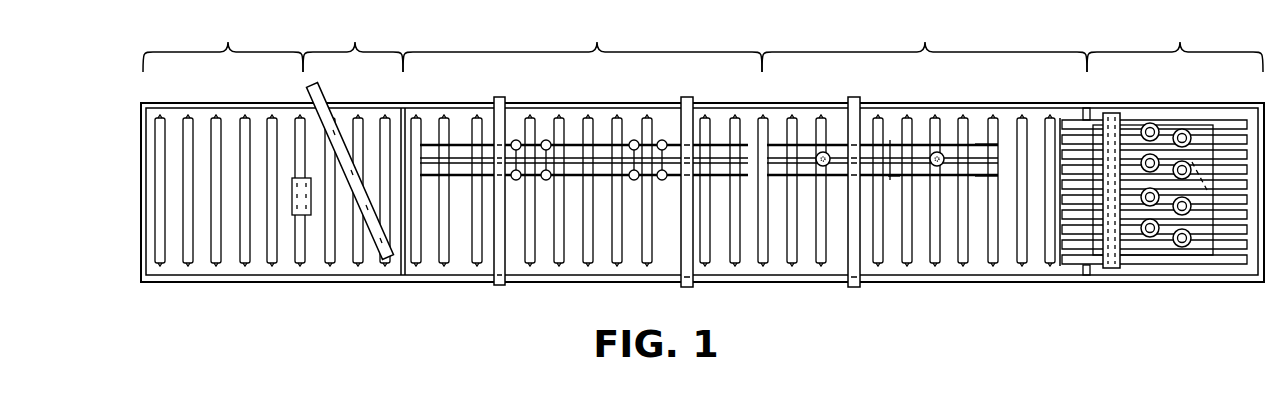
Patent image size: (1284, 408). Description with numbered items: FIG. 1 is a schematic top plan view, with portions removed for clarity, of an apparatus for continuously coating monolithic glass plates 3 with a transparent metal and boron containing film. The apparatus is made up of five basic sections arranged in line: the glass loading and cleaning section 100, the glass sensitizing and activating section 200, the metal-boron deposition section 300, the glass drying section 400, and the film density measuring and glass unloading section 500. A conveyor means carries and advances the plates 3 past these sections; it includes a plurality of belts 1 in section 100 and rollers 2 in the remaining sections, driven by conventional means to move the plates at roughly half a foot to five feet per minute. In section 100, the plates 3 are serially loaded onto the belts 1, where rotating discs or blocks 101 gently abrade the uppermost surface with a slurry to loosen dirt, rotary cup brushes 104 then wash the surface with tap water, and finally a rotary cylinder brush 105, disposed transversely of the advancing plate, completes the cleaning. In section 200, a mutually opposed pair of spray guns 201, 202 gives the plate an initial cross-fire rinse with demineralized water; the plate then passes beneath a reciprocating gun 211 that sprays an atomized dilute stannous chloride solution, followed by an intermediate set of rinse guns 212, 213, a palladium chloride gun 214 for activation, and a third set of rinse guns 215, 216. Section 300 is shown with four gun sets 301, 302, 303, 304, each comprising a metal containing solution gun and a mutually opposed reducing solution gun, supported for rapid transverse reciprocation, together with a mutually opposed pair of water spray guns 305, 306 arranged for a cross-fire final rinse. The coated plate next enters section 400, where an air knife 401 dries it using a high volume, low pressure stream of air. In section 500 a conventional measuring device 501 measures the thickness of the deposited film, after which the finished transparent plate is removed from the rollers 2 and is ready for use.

The film density measuring and glass unloading section 500 is at (229, 162).
The glass drying section 400 is at (353, 165).
The metal-boron deposition section 300 is at (582, 150).
The glass sensitizing and activating section 200 is at (922, 150).
The glass loading and cleaning section 100 is at (1161, 171).
The rollers 2 is at (148, 192).
The measuring device 501 is at (292, 215).
The air knife 401 is at (380, 245).
The water spray gun 306 is at (432, 145).
The water spray gun 305 is at (427, 177).
The gun set 304 is at (516, 140).
The gun set 303 is at (546, 140).
The gun set 302 is at (634, 140).
The gun set 301 is at (678, 108).
The rinse gun 216 is at (775, 145).
The rinse gun 215 is at (770, 176).
The palladium chloride gun 214 is at (822, 152).
The intermediate rinse gun 213 is at (892, 144).
The intermediate rinse gun 212 is at (890, 177).
The reciprocating gun 211 is at (938, 152).
The spray gun 202 is at (979, 148).
The spray gun 201 is at (978, 177).
The rotary cup brushes 104 is at (1150, 123).
The rotating discs or blocks 101 is at (1182, 129).
The rotary cylinder brush 105 is at (1108, 268).
The belts 1 is at (1147, 245).
The glass plates 3 is at (1215, 240).